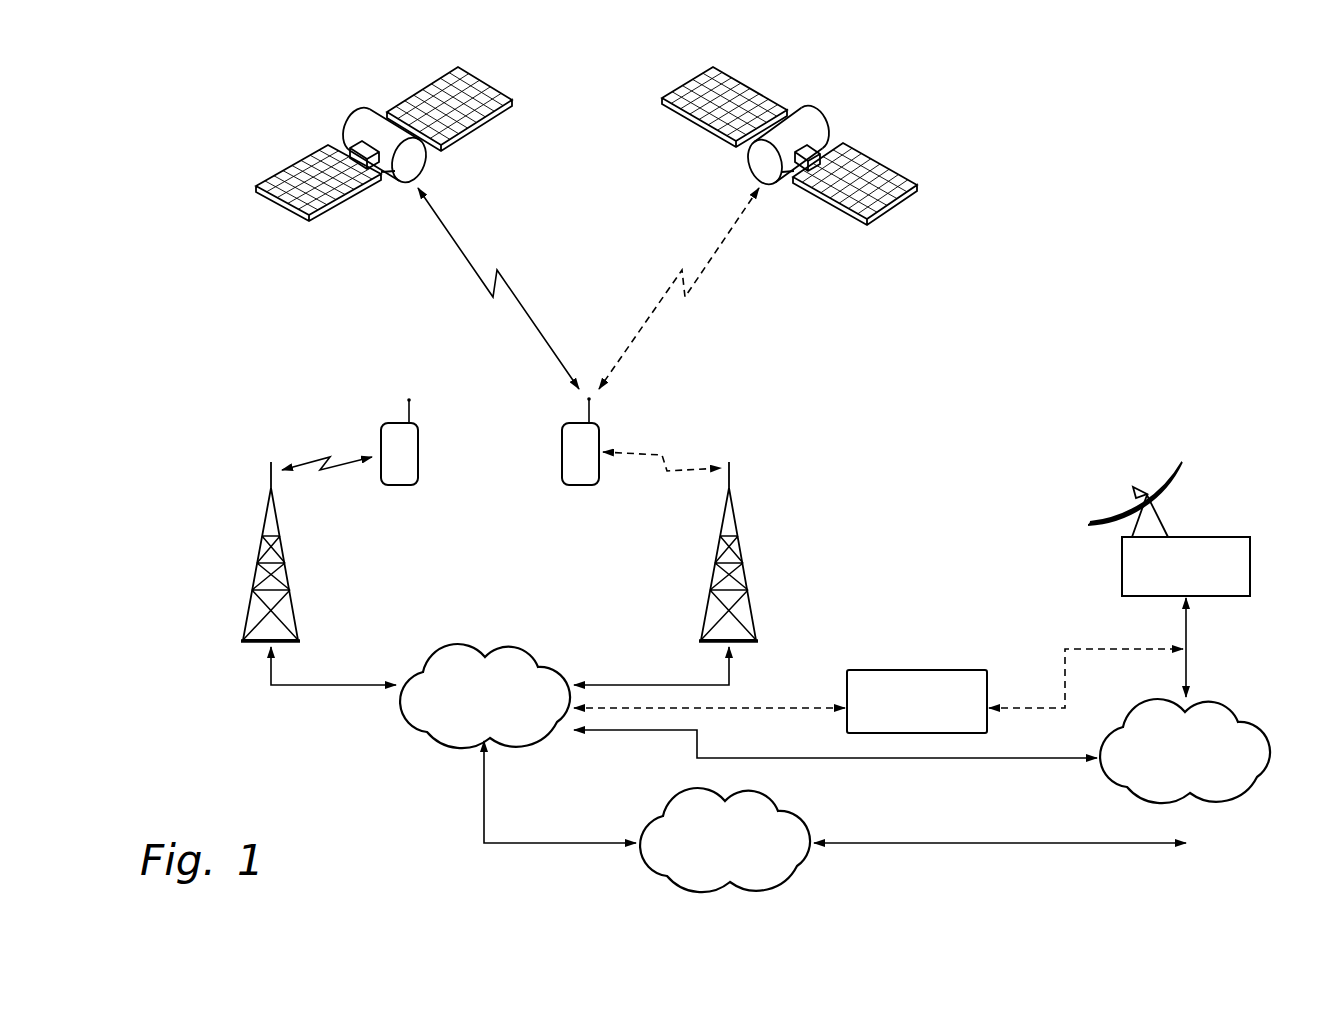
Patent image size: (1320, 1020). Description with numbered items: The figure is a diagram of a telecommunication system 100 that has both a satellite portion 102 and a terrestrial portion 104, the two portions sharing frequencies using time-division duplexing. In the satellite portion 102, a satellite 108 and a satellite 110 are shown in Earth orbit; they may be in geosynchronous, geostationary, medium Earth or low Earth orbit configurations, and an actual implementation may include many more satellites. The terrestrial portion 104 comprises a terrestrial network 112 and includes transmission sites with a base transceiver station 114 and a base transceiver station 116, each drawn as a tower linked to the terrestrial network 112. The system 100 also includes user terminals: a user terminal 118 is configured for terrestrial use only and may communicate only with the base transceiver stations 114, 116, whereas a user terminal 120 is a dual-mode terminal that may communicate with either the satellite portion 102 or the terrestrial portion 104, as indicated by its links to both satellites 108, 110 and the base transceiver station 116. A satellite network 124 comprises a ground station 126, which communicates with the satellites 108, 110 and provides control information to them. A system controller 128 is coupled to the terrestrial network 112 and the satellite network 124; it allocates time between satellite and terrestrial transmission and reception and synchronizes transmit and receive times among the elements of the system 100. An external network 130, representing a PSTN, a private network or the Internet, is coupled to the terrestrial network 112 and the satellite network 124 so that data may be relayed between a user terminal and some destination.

The system 100 is at (1194, 149).
The satellite portion 102 is at (215, 292).
The terrestrial portion 104 is at (201, 483).
The satellite 108 is at (423, 169).
The satellite 110 is at (825, 117).
The terrestrial network 112 is at (430, 742).
The base transceiver station 114 is at (289, 573).
The base transceiver station 116 is at (742, 573).
The user terminal 118 is at (401, 487).
The user terminal 120 is at (581, 487).
The satellite network 124 is at (1243, 803).
The ground station 126 is at (1243, 537).
The system controller 128 is at (965, 670).
The external network 130 is at (802, 807).